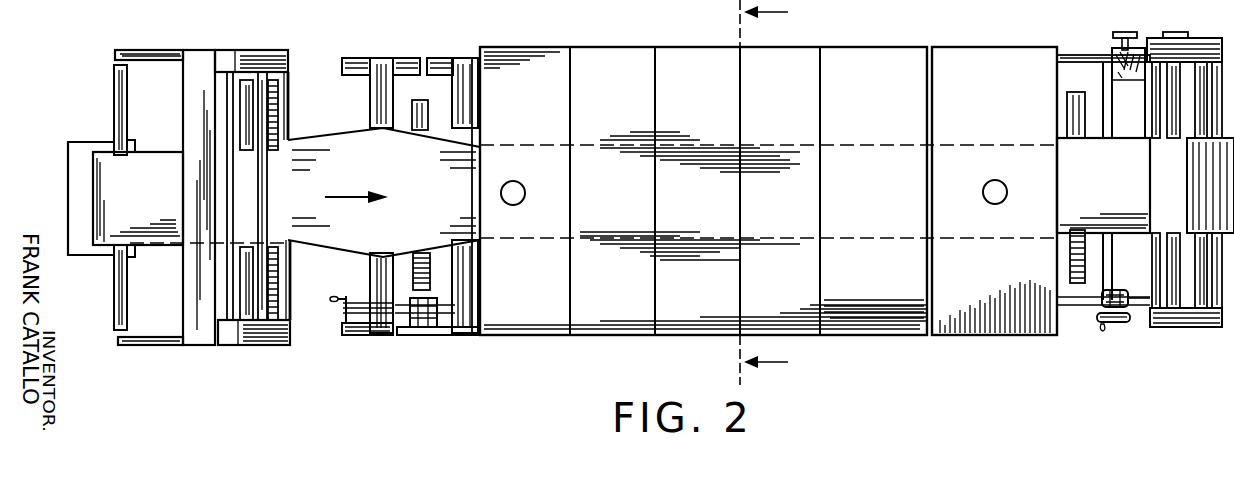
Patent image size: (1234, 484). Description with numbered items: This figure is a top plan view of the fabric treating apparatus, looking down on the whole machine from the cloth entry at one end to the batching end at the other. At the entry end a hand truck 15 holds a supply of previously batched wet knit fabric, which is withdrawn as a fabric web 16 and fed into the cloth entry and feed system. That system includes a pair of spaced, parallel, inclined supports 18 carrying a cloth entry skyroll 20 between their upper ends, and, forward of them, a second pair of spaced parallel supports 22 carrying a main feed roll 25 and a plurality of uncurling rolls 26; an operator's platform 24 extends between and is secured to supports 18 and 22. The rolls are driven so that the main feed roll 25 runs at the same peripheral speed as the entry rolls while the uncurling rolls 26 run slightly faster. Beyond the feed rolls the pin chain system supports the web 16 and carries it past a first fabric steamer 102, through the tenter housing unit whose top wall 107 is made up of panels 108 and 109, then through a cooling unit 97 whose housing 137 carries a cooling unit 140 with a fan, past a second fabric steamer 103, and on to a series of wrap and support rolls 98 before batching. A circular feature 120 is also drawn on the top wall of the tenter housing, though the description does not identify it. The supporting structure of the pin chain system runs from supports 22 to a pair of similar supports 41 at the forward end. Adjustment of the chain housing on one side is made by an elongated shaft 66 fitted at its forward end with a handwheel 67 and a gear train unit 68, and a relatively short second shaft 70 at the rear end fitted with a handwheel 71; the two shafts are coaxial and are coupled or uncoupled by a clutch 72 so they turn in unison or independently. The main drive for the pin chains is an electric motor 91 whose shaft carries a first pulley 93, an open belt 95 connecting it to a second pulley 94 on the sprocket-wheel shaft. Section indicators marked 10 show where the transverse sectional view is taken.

The section line 10- 10 is at (744, 192).
The hand truck 15 is at (68, 143).
The fabric web 16 is at (156, 151).
The inclined supports 18 is at (153, 49).
The cloth entry skyroll 20 is at (113, 102).
The second pair of supports 22 is at (270, 48).
The operator's platform 24 is at (200, 55).
The main feed roll 25 is at (238, 111).
The uncurling rolls 26 is at (276, 110).
The forward supports 41 is at (1202, 38).
The elongated shaft 66 is at (437, 324).
The handwheel 67 is at (1108, 324).
The gear train unit 68 is at (1118, 290).
The second shaft 70 is at (368, 303).
The handwheel 71 is at (344, 310).
The clutch 72 is at (421, 329).
The electric motor 91 is at (1104, 60).
The first pulley 93 is at (1124, 32).
The second pulley 94 is at (1172, 31).
The open belt 95 is at (1149, 36).
The cooling unit 97 is at (956, 44).
The wrap and support rolls 98 is at (1170, 95).
The first fabric steamer 102 is at (420, 100).
The second fabric steamer 103 is at (1076, 92).
The top wall 107 is at (511, 46).
The top wall panel 108 is at (598, 46).
The top wall panel 109 is at (848, 46).
The port 120 is at (525, 186).
The housing 137 is at (948, 337).
The cooling unit 140 is at (1006, 184).